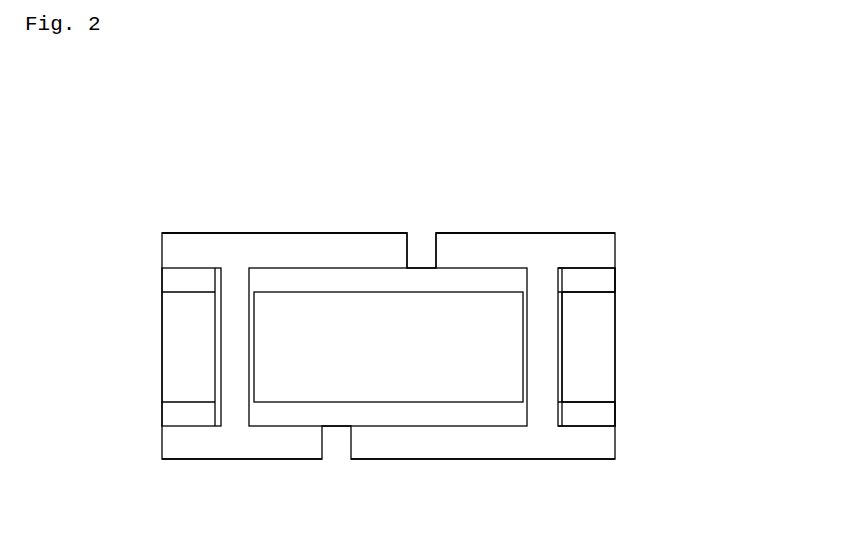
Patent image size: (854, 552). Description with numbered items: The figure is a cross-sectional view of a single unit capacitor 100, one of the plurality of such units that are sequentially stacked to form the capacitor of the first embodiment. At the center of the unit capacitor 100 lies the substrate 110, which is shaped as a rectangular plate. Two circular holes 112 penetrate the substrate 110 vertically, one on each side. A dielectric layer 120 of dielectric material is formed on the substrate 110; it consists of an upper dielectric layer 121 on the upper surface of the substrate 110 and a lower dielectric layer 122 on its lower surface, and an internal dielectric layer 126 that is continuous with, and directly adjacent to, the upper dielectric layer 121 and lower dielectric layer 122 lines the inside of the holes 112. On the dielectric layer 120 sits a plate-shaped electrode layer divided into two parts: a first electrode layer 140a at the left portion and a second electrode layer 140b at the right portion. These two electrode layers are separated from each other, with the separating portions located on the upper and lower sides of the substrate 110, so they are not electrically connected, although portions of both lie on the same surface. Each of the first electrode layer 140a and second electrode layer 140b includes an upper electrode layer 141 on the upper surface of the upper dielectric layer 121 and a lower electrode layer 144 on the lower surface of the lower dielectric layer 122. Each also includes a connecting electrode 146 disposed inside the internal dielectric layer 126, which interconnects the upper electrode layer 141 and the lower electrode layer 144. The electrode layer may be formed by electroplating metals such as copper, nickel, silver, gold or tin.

The unit capacitor 100 is at (404, 113).
The substrate 110 is at (157, 353).
The holes 112 is at (228, 315).
The dielectric layer 120 is at (152, 276).
The upper dielectric layer 121 is at (603, 281).
The lower dielectric layer 122 is at (600, 412).
The internal dielectric layer 126 is at (565, 343).
The first electrode layer 140a is at (188, 228).
The second electrode layer 140b is at (506, 222).
The upper electrode layer 141 is at (283, 233).
The lower electrode layer 144 is at (238, 460).
The connecting electrode 146 is at (233, 382).